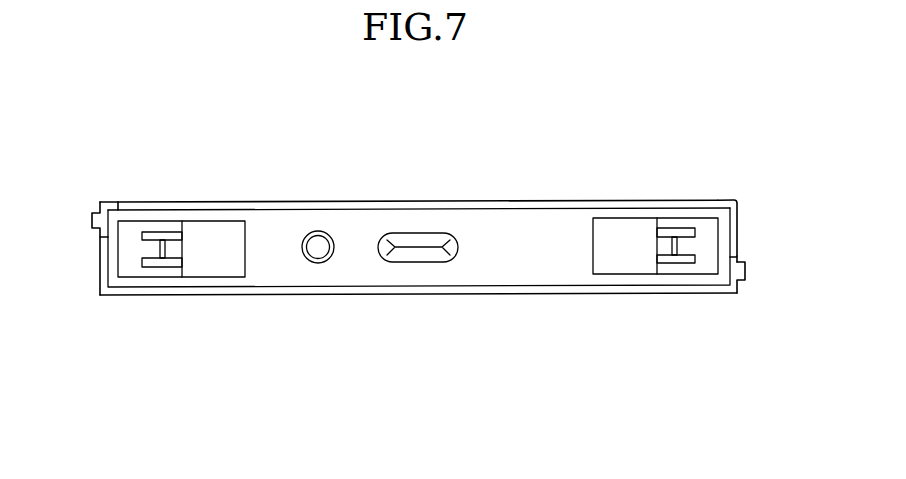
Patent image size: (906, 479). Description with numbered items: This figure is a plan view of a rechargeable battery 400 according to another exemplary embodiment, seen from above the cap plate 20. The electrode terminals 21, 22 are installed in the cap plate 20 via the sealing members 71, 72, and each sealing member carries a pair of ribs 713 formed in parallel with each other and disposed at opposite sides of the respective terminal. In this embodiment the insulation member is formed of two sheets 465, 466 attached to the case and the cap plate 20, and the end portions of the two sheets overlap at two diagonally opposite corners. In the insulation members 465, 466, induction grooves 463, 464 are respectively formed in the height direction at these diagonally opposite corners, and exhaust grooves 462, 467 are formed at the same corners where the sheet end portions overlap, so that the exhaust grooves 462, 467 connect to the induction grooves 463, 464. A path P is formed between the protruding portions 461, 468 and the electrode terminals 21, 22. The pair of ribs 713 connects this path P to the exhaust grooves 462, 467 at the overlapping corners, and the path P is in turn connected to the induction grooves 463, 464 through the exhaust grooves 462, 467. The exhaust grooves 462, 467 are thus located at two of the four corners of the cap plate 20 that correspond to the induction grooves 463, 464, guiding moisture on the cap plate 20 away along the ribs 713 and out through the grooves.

The rechargeable battery 400 is at (391, 127).
The protruding portion 461 is at (528, 201).
The exhaust groove 462 is at (110, 204).
The induction groove 463 is at (100, 212).
The induction groove 464 is at (741, 284).
The insulation member sheet 465 is at (710, 188).
The insulation member sheet 466 is at (436, 308).
The exhaust groove 467 is at (738, 259).
The protruding portion 468 is at (530, 288).
The path P is at (142, 216).
The cap plate 20 is at (472, 226).
The electrode terminal 21 is at (217, 210).
The electrode terminal 22 is at (620, 208).
The sealing member 71 is at (134, 268).
The sealing member 72 is at (703, 265).
The pair of ribs 713 is at (174, 258).